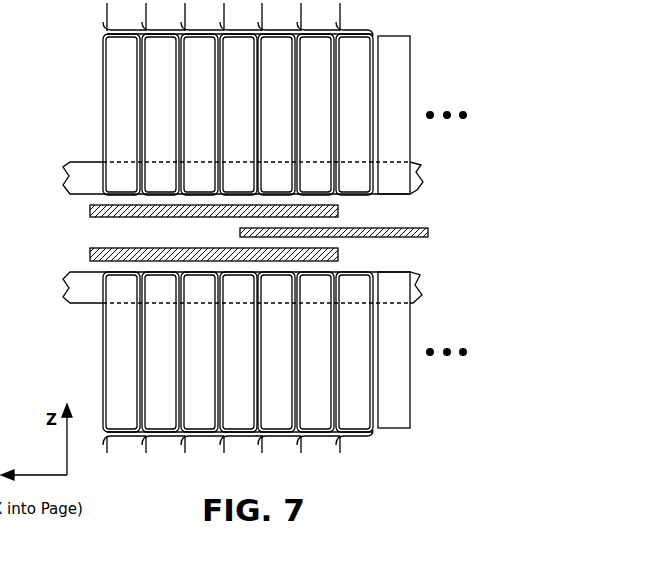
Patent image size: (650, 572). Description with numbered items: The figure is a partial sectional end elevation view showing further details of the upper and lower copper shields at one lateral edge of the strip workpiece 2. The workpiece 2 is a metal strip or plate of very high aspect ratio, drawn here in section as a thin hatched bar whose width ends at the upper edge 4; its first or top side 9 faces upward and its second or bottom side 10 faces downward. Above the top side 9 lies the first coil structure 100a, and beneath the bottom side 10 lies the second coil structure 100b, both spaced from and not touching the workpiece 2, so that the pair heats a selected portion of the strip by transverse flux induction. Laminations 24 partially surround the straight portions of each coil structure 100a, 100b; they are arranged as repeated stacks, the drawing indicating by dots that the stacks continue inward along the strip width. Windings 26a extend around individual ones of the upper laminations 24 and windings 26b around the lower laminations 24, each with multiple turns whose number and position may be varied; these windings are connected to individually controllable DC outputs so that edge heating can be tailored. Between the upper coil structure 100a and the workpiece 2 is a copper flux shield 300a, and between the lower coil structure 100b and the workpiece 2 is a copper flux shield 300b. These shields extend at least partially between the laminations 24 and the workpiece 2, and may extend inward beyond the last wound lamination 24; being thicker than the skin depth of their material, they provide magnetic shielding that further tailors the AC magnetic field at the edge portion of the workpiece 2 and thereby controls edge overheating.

The workpiece 2 is at (428, 233).
The upper edge 4 is at (230, 233).
The first side 9 is at (403, 228).
The second side 10 is at (403, 237).
The laminations 24 is at (285, 228).
The windings 26a is at (384, 22).
The windings 26b is at (372, 457).
The first coil structure 100a is at (70, 162).
The second coil structure 100b is at (70, 303).
The copper flux shield 300a is at (90, 211).
The copper flux shield 300b is at (90, 255).